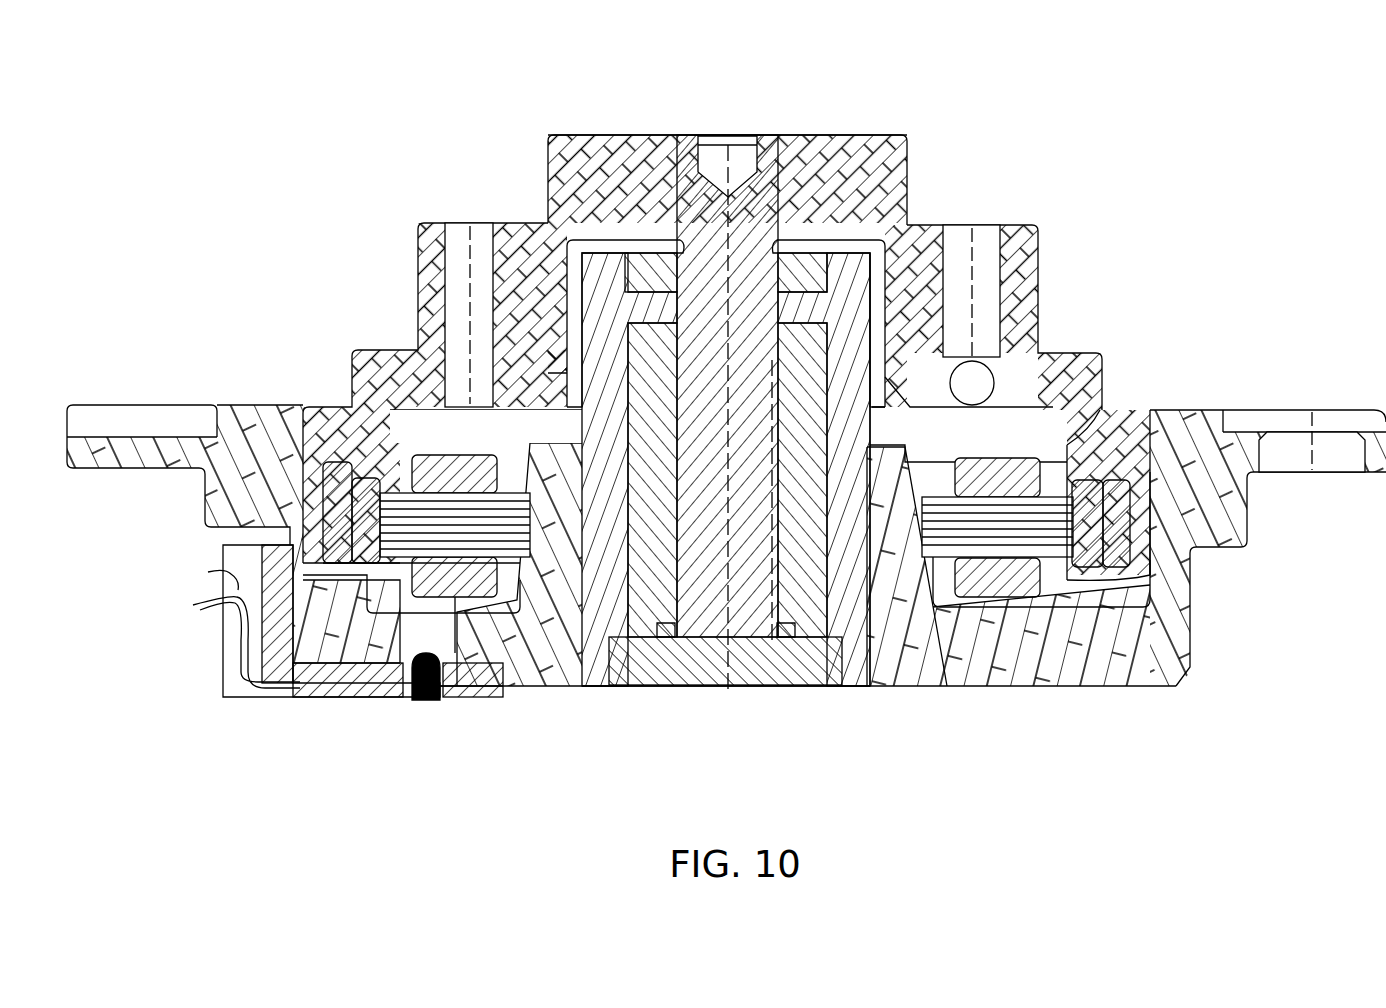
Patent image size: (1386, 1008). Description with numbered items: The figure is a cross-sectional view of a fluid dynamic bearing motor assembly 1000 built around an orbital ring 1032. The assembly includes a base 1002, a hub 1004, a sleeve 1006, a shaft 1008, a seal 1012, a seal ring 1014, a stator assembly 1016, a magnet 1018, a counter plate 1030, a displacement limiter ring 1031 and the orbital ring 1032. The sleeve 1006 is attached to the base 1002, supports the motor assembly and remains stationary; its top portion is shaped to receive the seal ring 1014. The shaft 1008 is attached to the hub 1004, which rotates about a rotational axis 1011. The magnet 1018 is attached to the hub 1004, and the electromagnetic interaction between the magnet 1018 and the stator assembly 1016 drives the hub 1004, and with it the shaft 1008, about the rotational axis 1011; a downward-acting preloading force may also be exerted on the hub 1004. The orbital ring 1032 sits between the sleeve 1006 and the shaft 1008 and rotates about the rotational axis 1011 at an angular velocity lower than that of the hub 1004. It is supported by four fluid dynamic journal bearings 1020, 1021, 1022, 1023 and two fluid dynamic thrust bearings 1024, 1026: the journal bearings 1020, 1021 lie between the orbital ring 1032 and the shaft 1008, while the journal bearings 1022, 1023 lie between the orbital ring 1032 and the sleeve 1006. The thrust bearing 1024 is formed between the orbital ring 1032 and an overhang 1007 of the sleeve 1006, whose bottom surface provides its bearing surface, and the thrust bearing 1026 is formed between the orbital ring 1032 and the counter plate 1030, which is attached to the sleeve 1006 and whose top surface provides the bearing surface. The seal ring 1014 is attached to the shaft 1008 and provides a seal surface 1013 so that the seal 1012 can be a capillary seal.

The fluid dynamic bearing motor assembly 1000 is at (317, 121).
The base 1002 is at (212, 497).
The hub 1004 is at (548, 175).
The sleeve 1006 is at (582, 295).
The overhang 1007 is at (683, 243).
The shaft 1008 is at (687, 160).
The rotational axis 1011 is at (740, 230).
The seal 1012 is at (840, 250).
The seal surface 1013 is at (630, 245).
The seal ring 1014 is at (655, 250).
The stator assembly 1016 is at (1098, 354).
The magnet 1018 is at (1100, 462).
The fluid dynamic journal bearing 1020 is at (775, 495).
The fluid dynamic journal bearing 1021 is at (760, 577).
The fluid dynamic journal bearing 1022 is at (867, 590).
The fluid dynamic journal bearing 1023 is at (833, 387).
The fluid dynamic thrust bearing 1024 is at (800, 258).
The fluid dynamic thrust bearing 1026 is at (862, 600).
The counter plate 1030 is at (822, 600).
The displacement limiter ring 1031 is at (648, 572).
The orbital ring 1032 is at (620, 585).